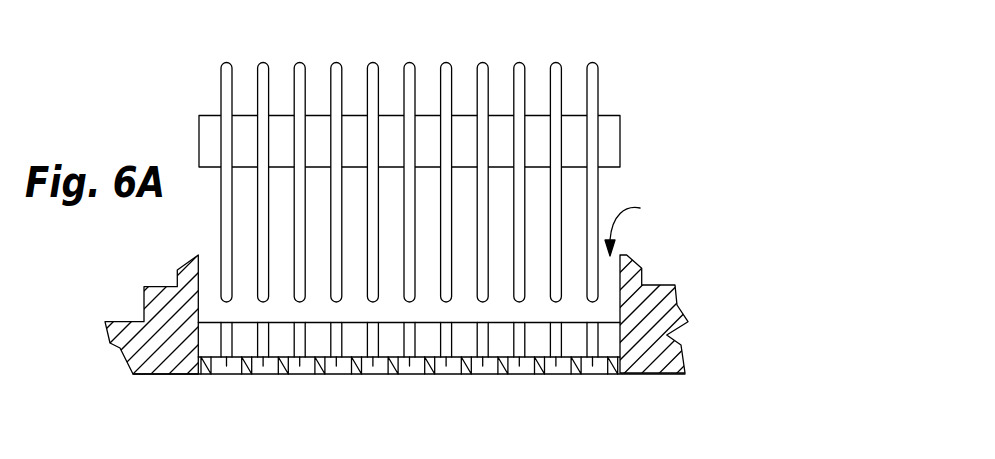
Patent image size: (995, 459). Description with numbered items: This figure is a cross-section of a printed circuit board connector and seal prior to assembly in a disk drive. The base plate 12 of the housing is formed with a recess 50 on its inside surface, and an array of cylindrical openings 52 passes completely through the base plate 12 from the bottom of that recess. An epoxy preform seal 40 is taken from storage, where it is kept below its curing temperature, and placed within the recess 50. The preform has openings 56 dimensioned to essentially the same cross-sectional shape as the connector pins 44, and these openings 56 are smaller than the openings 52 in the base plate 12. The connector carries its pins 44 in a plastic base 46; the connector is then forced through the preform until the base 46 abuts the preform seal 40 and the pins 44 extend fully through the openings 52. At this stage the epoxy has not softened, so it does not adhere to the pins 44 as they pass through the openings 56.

The base plate 12 is at (146, 298).
The epoxy preform seal 40 is at (425, 345).
The pins 44 is at (518, 64).
The base 46 is at (615, 140).
The recess 50 is at (639, 224).
The openings 52 is at (300, 365).
The openings 56 is at (553, 362).